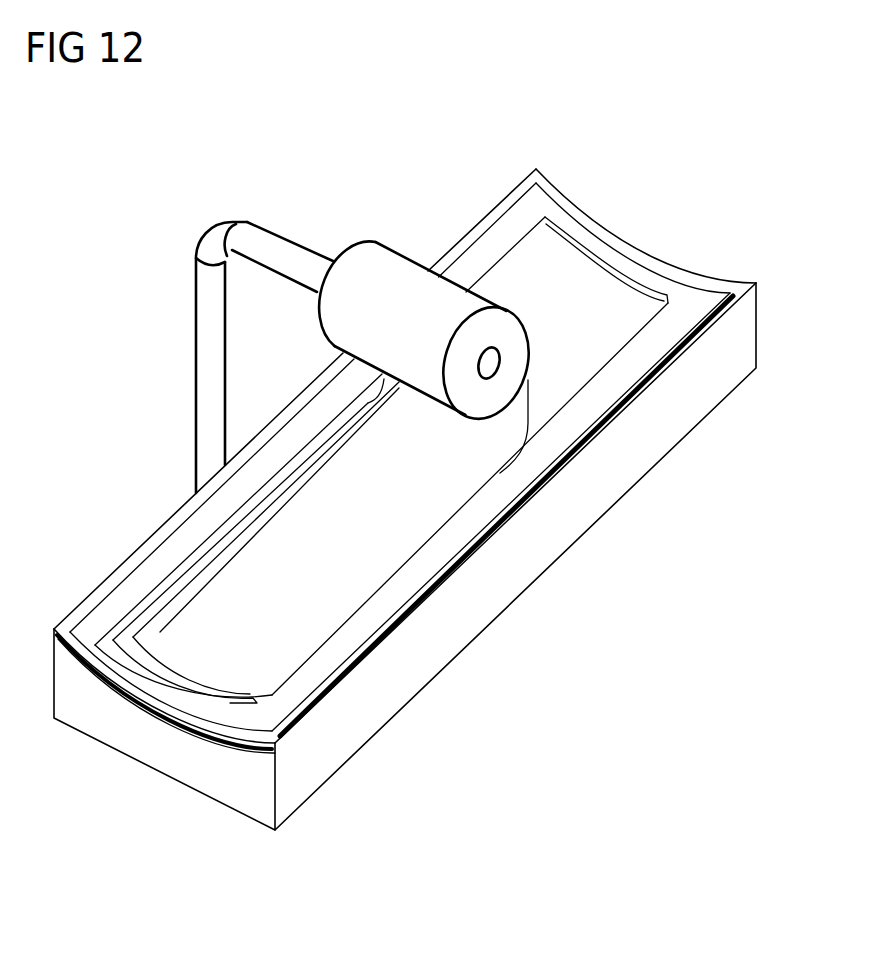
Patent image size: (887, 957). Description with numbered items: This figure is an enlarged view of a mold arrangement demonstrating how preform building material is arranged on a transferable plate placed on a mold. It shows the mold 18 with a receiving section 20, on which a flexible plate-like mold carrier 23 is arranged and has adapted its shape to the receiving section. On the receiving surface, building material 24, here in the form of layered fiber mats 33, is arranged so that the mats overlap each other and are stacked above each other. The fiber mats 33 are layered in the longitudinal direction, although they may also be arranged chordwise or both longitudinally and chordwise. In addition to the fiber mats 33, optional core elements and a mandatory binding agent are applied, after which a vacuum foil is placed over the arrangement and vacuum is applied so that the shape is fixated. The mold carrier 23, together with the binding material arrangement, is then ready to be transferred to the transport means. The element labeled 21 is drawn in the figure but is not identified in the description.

The mold 18 is at (524, 693).
The receiving section 20 is at (483, 533).
The film sheet 21 is at (555, 437).
The flexible plate-like mold carrier 23 is at (308, 675).
The building material 24 is at (227, 612).
The fiber mats 33 is at (173, 622).